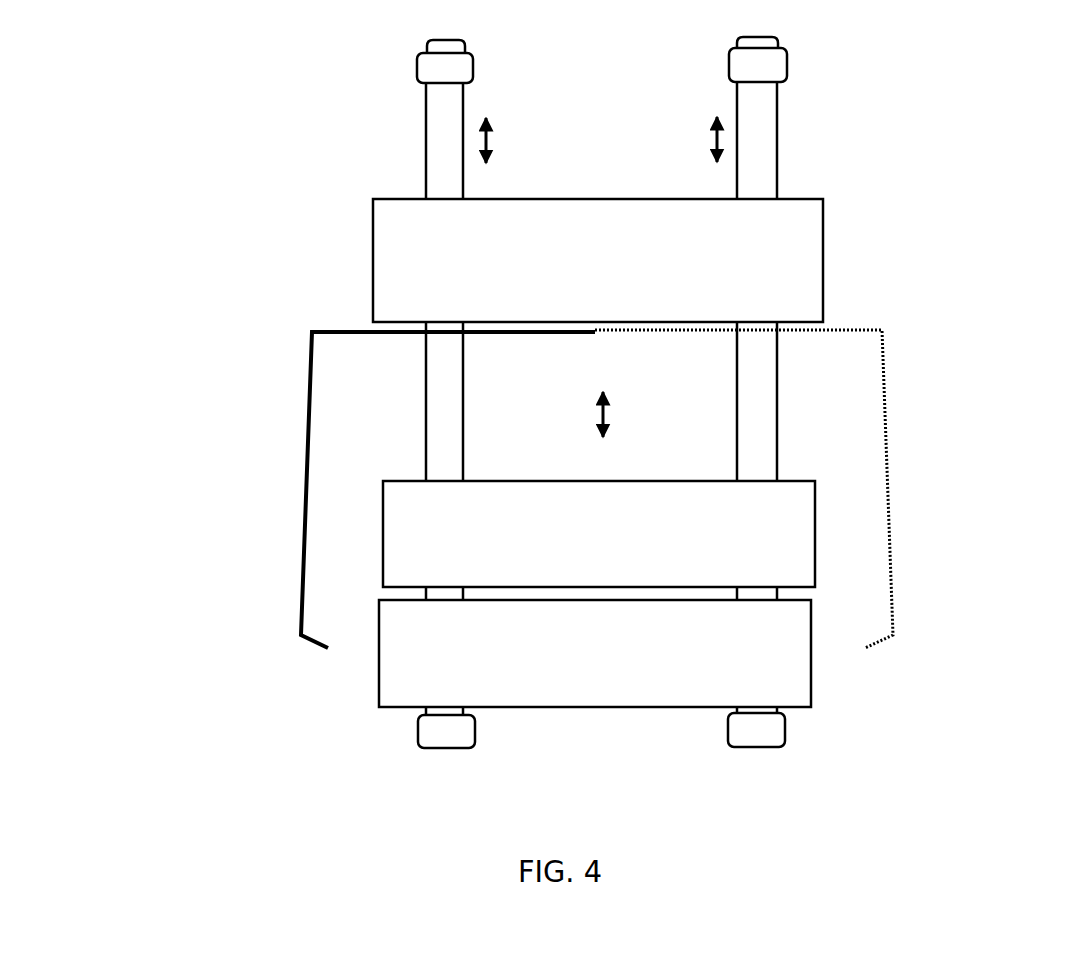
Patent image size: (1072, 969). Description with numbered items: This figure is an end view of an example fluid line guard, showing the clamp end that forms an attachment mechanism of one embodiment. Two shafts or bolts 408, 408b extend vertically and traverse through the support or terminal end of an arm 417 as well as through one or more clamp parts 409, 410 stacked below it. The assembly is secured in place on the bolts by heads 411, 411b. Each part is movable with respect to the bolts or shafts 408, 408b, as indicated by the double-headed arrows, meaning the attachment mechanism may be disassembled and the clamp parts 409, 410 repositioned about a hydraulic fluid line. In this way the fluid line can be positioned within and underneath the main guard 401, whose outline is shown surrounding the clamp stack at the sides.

The main guard 401 is at (886, 415).
The shaft or bolt 408 is at (777, 141).
The shaft or bolt 408b is at (426, 142).
The clamp part 409 is at (382, 530).
The clamp part 410 is at (379, 665).
The head 411 is at (785, 731).
The head 411b is at (475, 737).
The arm 417 is at (823, 263).